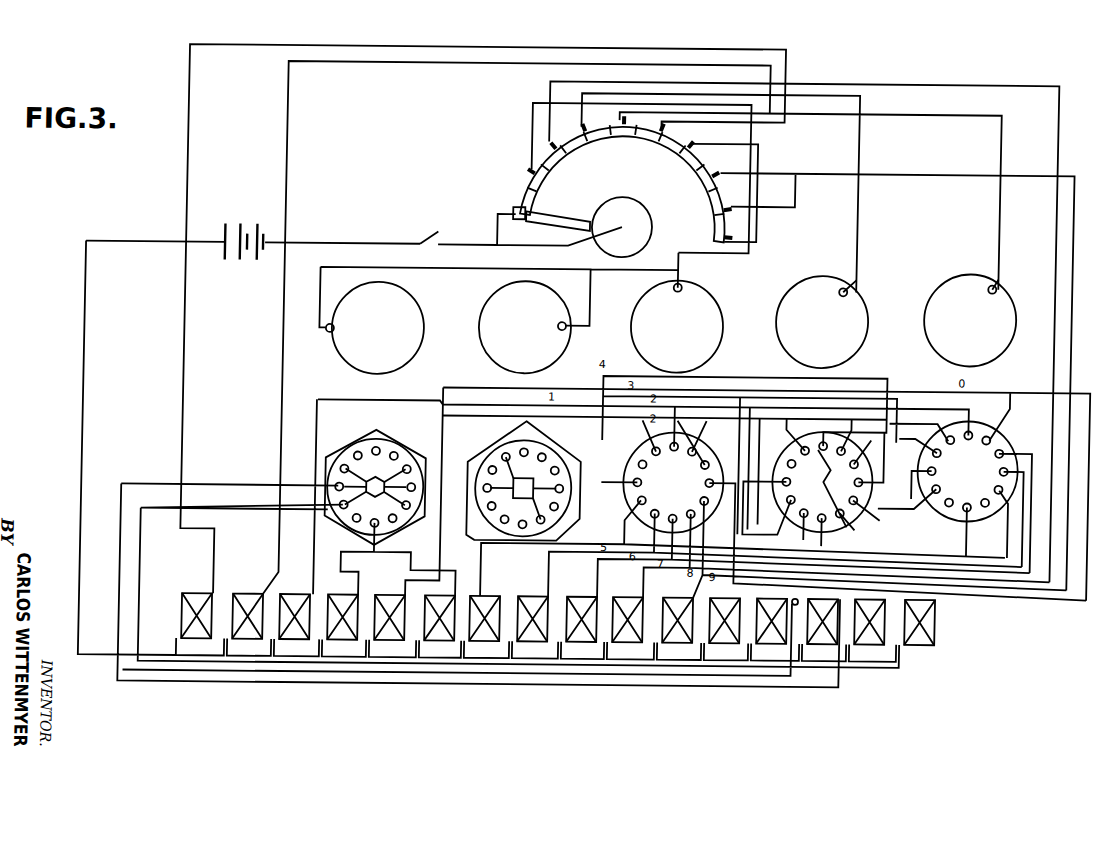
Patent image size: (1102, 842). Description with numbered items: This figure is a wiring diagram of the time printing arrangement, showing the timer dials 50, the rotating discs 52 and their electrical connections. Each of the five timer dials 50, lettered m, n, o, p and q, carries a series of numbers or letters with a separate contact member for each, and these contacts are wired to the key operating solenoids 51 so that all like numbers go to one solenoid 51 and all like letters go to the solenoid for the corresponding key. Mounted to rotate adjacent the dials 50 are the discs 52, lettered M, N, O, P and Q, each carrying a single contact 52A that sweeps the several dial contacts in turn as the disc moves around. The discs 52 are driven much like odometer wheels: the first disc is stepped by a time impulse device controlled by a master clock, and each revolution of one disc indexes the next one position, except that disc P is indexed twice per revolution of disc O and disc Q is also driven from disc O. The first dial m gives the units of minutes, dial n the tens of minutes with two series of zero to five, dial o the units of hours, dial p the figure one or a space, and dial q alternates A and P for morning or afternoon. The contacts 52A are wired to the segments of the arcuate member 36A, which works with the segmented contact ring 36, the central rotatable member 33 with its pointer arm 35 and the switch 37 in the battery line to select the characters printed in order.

The rotatable dial member 33 is at (637, 207).
The pointer arm 35 is at (582, 217).
The contact segments 36 is at (548, 150).
The arcuate member 36A is at (527, 176).
The switch 37 is at (424, 240).
The timer dials 50 is at (984, 518).
The solenoid 51 is at (940, 630).
The discs 52 is at (1013, 337).
The contact 52A is at (988, 291).